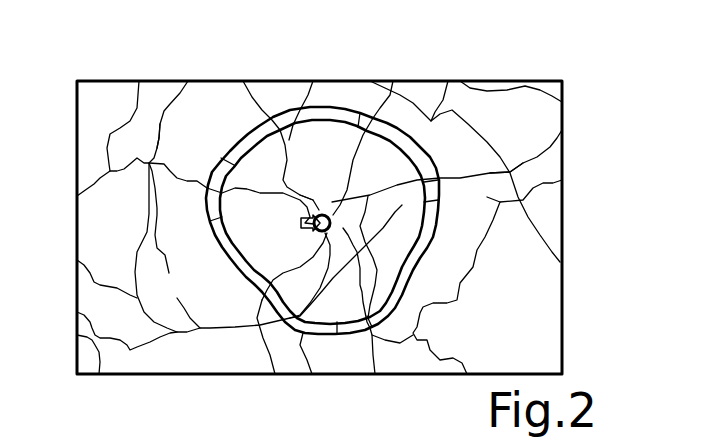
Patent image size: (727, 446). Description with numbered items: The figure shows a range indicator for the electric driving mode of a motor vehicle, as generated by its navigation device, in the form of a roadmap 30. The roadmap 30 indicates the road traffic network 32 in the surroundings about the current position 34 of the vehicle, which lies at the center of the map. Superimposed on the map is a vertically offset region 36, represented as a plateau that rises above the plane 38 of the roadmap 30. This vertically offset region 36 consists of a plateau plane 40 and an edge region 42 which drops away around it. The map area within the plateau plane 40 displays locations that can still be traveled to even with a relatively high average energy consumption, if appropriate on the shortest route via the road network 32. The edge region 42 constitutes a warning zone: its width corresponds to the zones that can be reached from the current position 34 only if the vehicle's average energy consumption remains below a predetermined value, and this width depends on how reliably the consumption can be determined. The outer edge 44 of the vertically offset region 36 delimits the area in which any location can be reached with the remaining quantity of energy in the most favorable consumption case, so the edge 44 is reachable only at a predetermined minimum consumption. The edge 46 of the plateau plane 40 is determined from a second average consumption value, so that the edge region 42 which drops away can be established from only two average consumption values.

The roadmap 30 is at (575, 224).
The road traffic network 32 is at (500, 203).
The current position 34 is at (328, 216).
The vertically offset region 36 is at (317, 185).
The plane of the roadmap 38 is at (160, 94).
The plateau plane 40 is at (327, 142).
The edge region which drops away 42 is at (428, 254).
The outer edge 44 is at (222, 270).
The edge of the plateau plane 46 is at (228, 243).